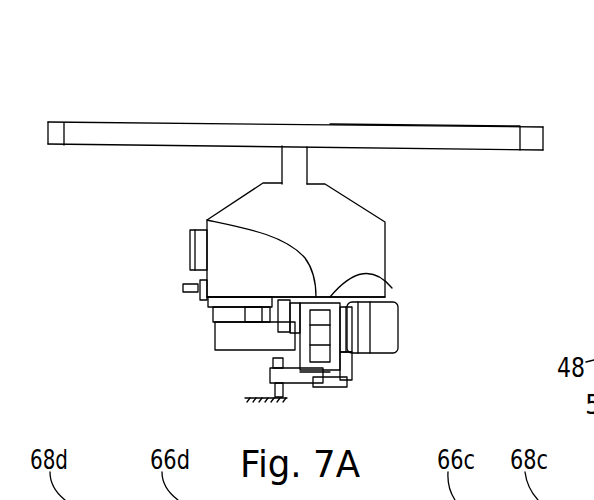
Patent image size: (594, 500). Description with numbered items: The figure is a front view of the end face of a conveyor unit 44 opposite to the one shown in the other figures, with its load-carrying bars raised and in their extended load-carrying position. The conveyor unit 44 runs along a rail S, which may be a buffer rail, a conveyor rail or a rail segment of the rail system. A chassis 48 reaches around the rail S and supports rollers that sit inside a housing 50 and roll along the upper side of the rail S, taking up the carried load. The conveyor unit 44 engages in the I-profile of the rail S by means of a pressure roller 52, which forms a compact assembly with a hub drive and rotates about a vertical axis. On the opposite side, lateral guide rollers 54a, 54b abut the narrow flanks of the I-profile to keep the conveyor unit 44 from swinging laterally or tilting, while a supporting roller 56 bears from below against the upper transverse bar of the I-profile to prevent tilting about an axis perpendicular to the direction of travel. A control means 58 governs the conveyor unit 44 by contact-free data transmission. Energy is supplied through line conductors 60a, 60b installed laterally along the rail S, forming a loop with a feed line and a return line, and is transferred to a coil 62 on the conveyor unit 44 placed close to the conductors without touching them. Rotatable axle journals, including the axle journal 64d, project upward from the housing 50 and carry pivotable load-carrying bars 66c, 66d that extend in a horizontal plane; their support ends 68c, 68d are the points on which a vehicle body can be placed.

The conveyor unit 44 is at (385, 257).
The chassis 48 is at (184, 321).
The housing 50 is at (380, 233).
The pressure roller 52 is at (272, 339).
The lateral guide roller 54a is at (392, 288).
The lateral guide roller 54b is at (340, 378).
The supporting roller 56 is at (295, 325).
The control means 58 is at (393, 326).
The line conductor 60a is at (352, 333).
The line conductor 60b is at (354, 355).
The coil 62 is at (207, 220).
The axle journal 64d is at (308, 158).
The load-carrying bar 66c is at (440, 136).
The load-carrying bar 66d is at (206, 142).
The support end 68c is at (538, 126).
The support end 68d is at (62, 132).
The rail S is at (300, 384).